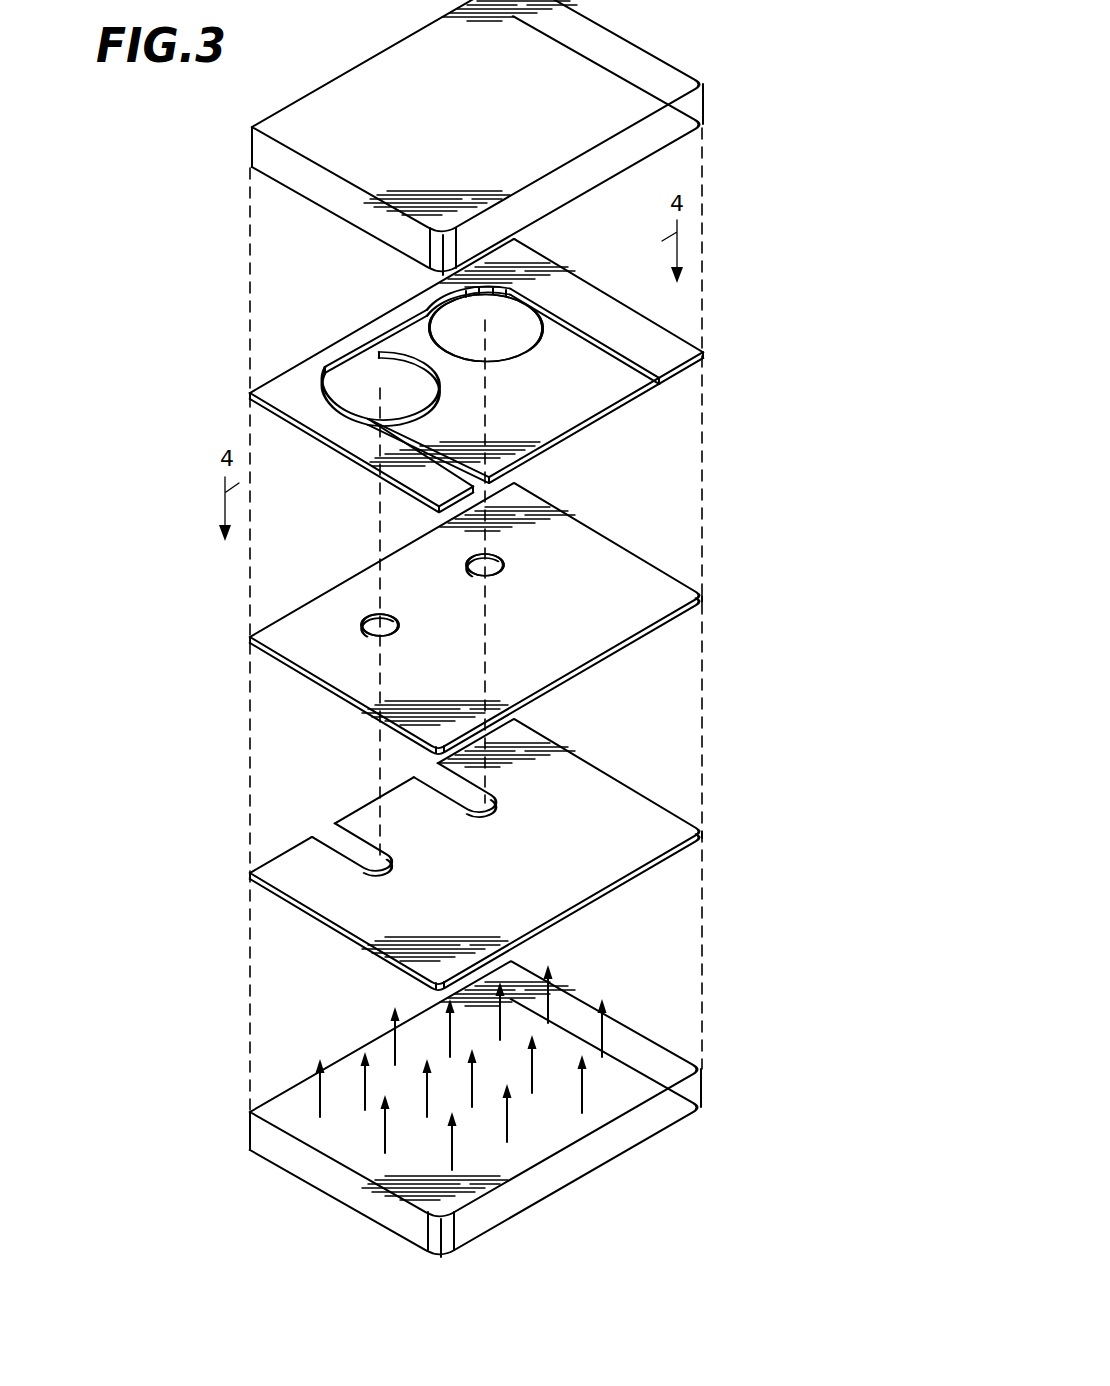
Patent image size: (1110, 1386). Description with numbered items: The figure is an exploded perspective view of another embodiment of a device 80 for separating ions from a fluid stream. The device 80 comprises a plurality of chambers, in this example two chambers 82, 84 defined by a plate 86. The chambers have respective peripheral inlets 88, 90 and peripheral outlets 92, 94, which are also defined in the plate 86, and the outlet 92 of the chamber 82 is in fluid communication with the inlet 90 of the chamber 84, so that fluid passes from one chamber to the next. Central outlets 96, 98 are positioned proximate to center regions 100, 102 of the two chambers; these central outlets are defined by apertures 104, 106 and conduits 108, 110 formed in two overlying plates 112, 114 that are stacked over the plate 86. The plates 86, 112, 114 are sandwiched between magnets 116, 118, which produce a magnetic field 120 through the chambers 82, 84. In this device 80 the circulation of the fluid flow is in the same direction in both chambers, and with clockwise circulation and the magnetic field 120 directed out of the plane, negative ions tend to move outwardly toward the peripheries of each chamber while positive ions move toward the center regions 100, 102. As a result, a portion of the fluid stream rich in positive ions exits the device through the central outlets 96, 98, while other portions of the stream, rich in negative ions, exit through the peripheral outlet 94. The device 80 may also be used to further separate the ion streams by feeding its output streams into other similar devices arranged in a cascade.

The device 80 is at (782, 156).
The chamber 82 is at (487, 368).
The chamber 84 is at (502, 292).
The plate 86 is at (336, 442).
The peripheral inlet 88 is at (396, 434).
The peripheral inlet 90 is at (428, 318).
The peripheral outlet 92 is at (384, 336).
The peripheral outlet 94 is at (690, 386).
The central outlet 96 is at (368, 627).
The central outlet 98 is at (500, 566).
The center region 100 is at (420, 392).
The center region 102 is at (498, 332).
The aperture 104 is at (392, 632).
The aperture 106 is at (490, 577).
The conduit 108 is at (326, 365).
The conduit 110 is at (545, 312).
The overlying plate 112 is at (518, 619).
The overlying plate 114 is at (682, 832).
The magnet 116 is at (505, 1109).
The magnet 118 is at (673, 77).
The magnetic field 120 is at (604, 1045).